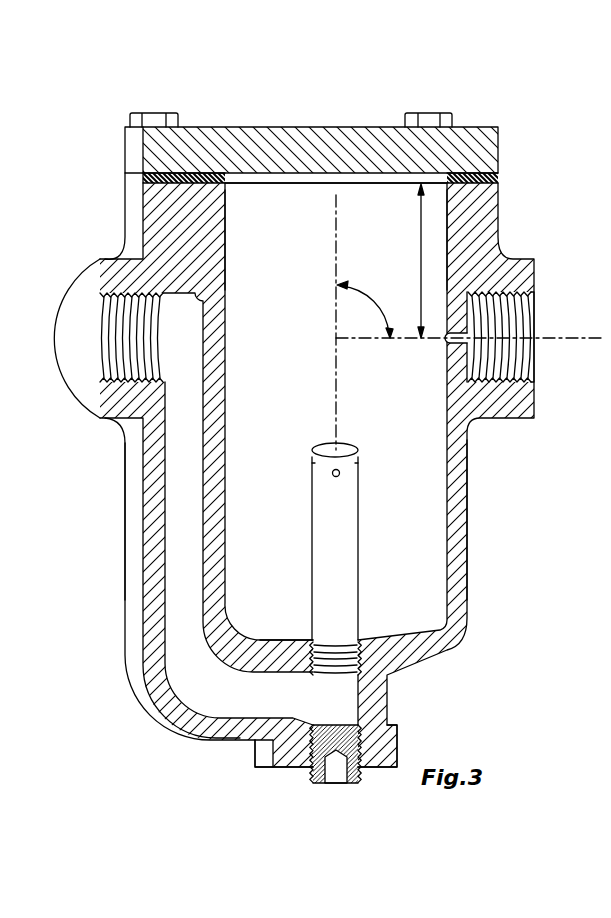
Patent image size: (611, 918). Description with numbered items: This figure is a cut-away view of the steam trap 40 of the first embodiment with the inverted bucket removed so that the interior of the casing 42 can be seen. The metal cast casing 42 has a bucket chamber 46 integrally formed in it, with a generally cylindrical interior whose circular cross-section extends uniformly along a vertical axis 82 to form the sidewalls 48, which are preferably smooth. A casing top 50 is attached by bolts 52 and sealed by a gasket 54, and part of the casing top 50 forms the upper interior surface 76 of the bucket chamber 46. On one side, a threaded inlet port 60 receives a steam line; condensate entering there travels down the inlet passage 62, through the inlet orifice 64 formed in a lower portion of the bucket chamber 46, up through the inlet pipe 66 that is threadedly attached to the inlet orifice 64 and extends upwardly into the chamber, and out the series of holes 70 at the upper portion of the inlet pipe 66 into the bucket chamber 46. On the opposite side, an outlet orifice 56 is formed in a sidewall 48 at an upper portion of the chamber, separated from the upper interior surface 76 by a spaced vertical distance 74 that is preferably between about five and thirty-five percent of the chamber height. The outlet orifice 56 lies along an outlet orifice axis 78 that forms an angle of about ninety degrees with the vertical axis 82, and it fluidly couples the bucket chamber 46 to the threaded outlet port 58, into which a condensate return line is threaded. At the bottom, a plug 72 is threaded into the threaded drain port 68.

The steam trap 40 is at (312, 451).
The casing 42 is at (309, 447).
The bucket chamber 46 is at (281, 446).
The sidewalls 48 is at (228, 352).
The casing top 50 is at (289, 126).
The bolts 52 is at (155, 113).
The gasket 54 is at (128, 177).
The outlet orifice 56 is at (453, 345).
The threaded outlet port 58 is at (527, 309).
The threaded inlet port 60 is at (102, 363).
The inlet passage 62 is at (175, 488).
The inlet orifice 64 is at (360, 653).
The inlet pipe 66 is at (352, 545).
The threaded drain port 68 is at (363, 737).
The holes 70 is at (330, 474).
The plug 72 is at (352, 784).
The spaced vertical distance 74 is at (421, 262).
The upper interior surface 76 is at (357, 182).
The outlet orifice axis 78 is at (399, 340).
The vertical axis 82 is at (336, 240).